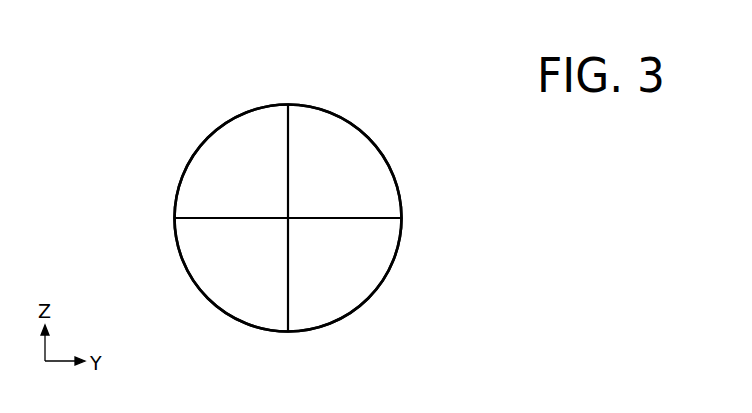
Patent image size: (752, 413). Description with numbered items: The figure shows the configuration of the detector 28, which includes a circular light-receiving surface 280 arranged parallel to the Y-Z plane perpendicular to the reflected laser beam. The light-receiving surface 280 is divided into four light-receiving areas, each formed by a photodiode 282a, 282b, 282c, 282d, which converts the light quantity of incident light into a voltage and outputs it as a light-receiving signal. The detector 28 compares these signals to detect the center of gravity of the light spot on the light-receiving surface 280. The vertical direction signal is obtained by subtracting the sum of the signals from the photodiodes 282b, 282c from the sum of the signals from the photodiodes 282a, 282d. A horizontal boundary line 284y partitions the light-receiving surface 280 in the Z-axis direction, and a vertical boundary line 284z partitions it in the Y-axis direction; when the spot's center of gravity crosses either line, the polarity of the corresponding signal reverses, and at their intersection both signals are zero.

The detector 28 is at (147, 93).
The light-receiving surface 280 is at (388, 162).
The photodiode 282a is at (398, 202).
The photodiode 282b is at (367, 285).
The photodiode 282c is at (205, 287).
The photodiode 282d is at (175, 202).
The boundary line 284y is at (197, 218).
The boundary line 284z is at (288, 310).